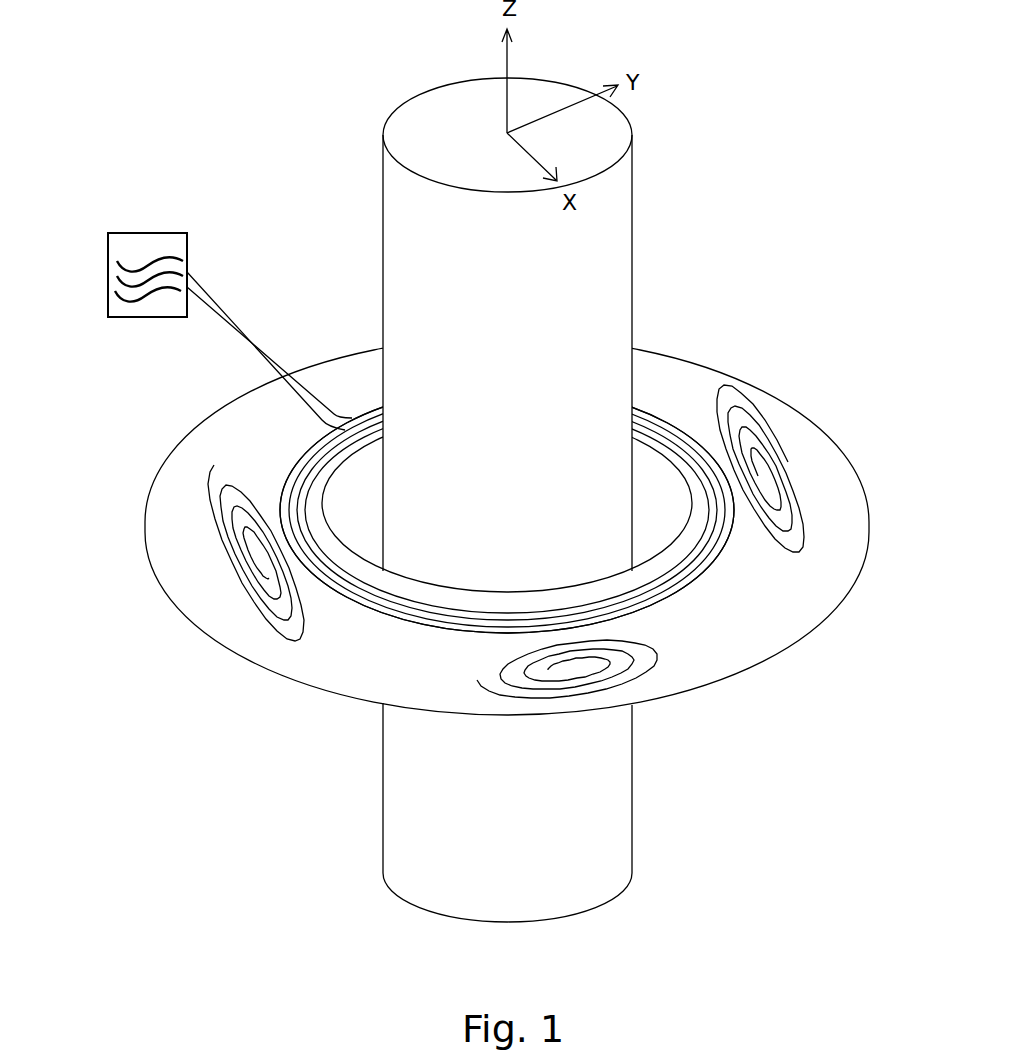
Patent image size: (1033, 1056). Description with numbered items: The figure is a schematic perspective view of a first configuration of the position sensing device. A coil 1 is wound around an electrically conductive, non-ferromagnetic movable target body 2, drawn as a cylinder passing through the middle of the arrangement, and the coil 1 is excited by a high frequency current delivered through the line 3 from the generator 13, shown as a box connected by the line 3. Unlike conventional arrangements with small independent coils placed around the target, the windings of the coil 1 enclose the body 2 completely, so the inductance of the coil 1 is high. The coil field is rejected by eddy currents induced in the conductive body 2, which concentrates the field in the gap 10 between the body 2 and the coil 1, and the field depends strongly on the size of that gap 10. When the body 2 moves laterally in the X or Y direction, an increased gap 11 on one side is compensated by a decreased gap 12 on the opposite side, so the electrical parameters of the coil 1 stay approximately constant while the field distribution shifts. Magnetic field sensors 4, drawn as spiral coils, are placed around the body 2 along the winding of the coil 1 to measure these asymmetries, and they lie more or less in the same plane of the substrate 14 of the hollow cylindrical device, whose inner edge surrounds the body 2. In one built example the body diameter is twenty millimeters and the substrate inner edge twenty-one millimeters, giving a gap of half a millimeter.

The coil 1 is at (677, 418).
The target body 2 is at (407, 125).
The line 3 is at (238, 318).
The magnetic field sensors 4 is at (668, 652).
The gap 10 is at (354, 552).
The increased gap 11 is at (359, 466).
The decreased gap 12 is at (650, 459).
The generator 13 is at (160, 307).
The substrate 14 is at (178, 531).